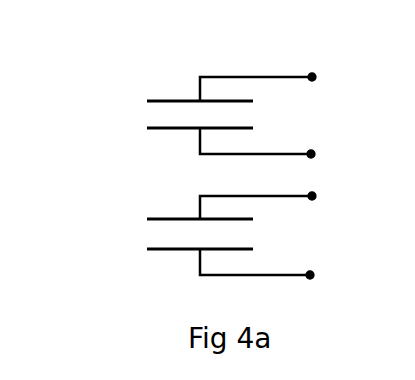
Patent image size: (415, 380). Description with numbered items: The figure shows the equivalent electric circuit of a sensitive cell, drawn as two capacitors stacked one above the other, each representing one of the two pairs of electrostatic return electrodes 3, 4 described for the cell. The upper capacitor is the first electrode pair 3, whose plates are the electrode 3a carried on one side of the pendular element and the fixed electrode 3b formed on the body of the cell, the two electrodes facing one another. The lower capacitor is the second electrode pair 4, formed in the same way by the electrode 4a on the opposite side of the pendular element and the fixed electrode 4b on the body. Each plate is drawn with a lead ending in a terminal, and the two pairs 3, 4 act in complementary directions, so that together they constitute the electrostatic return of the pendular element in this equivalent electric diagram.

The electrostatic return electrode pair 3 is at (243, 101).
The pendular element electrode 3a is at (161, 128).
The fixed electrode 3b is at (172, 101).
The electrostatic return electrode pair 4 is at (238, 258).
The pendular element electrode 4a is at (148, 218).
The fixed electrode 4b is at (153, 249).